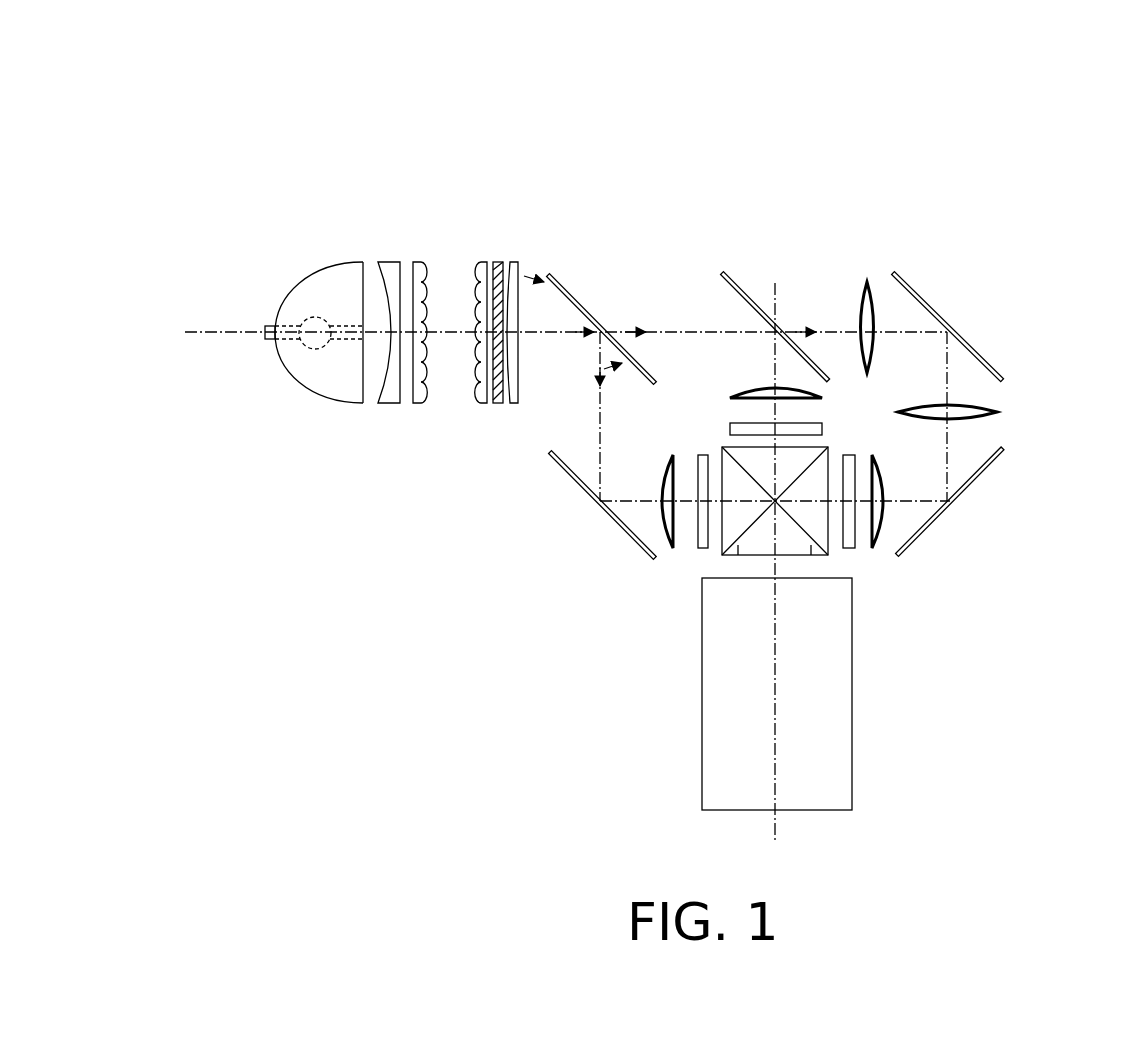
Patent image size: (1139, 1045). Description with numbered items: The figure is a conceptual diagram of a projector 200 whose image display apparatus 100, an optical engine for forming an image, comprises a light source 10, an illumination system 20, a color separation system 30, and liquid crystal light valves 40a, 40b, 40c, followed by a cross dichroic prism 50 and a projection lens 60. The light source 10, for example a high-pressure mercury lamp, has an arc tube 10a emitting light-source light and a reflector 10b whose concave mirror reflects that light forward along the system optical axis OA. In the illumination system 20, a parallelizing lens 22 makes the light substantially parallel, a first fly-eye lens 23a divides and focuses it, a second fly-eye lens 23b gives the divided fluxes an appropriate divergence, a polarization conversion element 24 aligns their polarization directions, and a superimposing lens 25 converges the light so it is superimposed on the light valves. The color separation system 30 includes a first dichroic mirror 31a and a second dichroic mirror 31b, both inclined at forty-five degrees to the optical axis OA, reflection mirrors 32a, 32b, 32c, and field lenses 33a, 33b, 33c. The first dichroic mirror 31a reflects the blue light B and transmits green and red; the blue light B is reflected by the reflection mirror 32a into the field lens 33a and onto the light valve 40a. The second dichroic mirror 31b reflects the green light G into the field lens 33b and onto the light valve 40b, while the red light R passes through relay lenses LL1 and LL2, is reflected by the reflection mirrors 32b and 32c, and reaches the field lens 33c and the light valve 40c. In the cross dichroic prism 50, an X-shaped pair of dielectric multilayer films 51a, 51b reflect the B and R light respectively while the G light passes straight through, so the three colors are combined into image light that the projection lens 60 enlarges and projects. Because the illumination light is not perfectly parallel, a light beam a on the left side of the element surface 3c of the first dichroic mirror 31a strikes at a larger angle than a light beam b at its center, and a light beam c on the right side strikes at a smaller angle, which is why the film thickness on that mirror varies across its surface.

The projector 200 is at (1087, 52).
The image display apparatus 100 is at (686, 167).
The light source 10 is at (263, 264).
The arc tube 10a is at (302, 338).
The reflector 10b is at (335, 265).
The illumination system 20 is at (431, 180).
The parallelizing lens 22 is at (379, 262).
The first fly-eye lens 23a is at (420, 262).
The second fly-eye lens 23b is at (478, 405).
The polarization conversion element 24 is at (493, 408).
The superimposing lens 25 is at (513, 405).
The system optical axis OA is at (449, 330).
The color separation system 30 is at (1036, 376).
The first dichroic mirror 31a is at (556, 280).
The second dichroic mirror 31b is at (726, 277).
The element surface 3c is at (657, 383).
The reflection mirror 32a is at (560, 462).
The reflection mirror 32b is at (968, 350).
The reflection mirror 32c is at (968, 488).
The field lens 33a is at (663, 518).
The field lens 33b is at (822, 395).
The field lens 33c is at (887, 510).
The relay lens LL1 is at (868, 282).
The relay lens LL2 is at (997, 413).
The liquid crystal light valve 40a is at (700, 550).
The liquid crystal light valve 40b is at (730, 428).
The liquid crystal light valve 40c is at (852, 550).
The cross dichroic prism 50 is at (752, 569).
The first dielectric multilayer film 51a is at (815, 560).
The second dielectric multilayer film 51b is at (737, 556).
The projection lens 60 is at (722, 730).
The light beam a is at (541, 287).
The light beam b is at (583, 334).
The light beam c is at (610, 372).
The red light R is at (947, 440).
The green light G is at (775, 375).
The blue light B is at (600, 418).